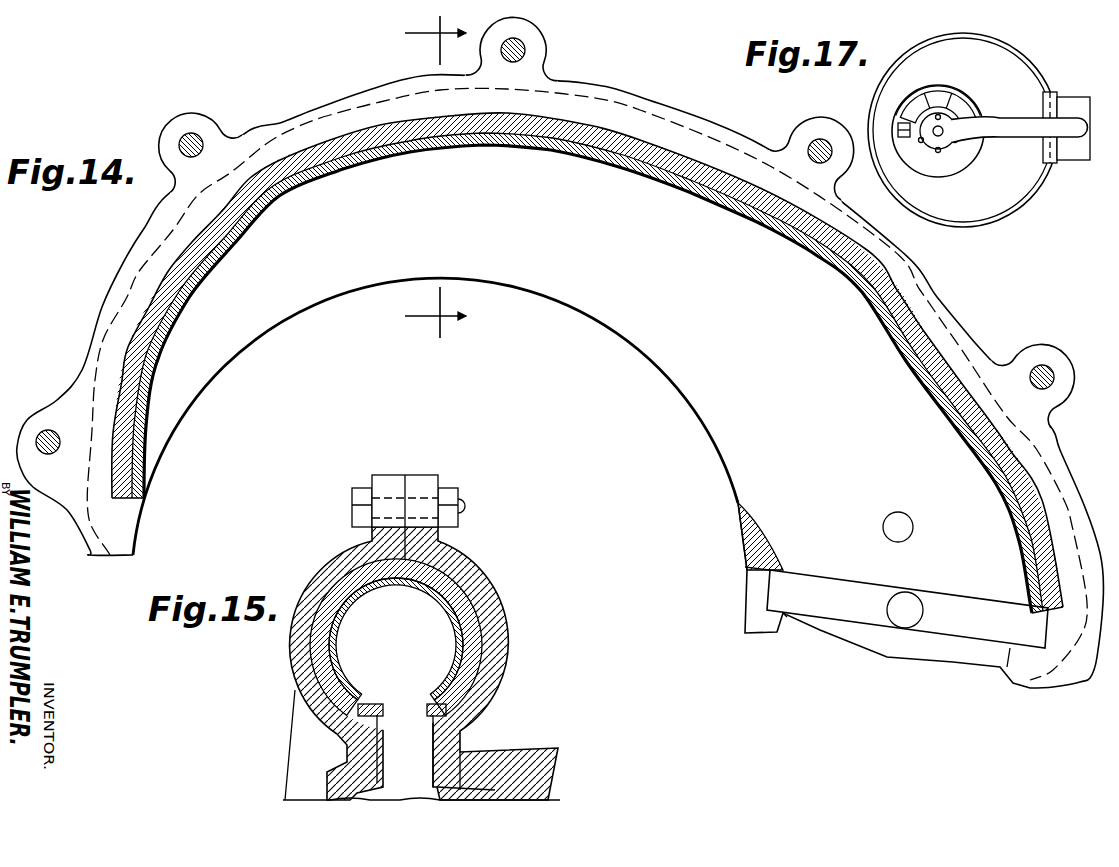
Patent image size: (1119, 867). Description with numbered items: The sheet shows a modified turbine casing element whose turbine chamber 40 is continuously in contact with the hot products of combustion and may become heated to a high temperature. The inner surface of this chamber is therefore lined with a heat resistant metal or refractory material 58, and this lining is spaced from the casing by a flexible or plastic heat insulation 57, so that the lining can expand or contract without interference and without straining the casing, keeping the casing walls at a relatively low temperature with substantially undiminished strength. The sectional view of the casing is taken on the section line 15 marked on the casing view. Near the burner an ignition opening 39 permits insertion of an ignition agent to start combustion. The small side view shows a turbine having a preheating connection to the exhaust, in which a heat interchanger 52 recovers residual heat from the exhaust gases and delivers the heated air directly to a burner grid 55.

In FIG. 14, the section line 15— 15 is at (427, 177).
In FIG. 14, the ignition opening 39 is at (885, 519).
In FIG. 14, the turbine chamber 40 is at (435, 389).
In FIG. 17, the heat interchanger 52 is at (1079, 161).
In FIG. 17, the burner grid 55 is at (1058, 93).
In FIG. 14, the heat insulation 57 is at (887, 303).
In FIG. 15, the heat insulation 57 is at (478, 633).
In FIG. 14, the refractory lining 58 is at (870, 320).
In FIG. 15, the refractory lining 58 is at (458, 602).